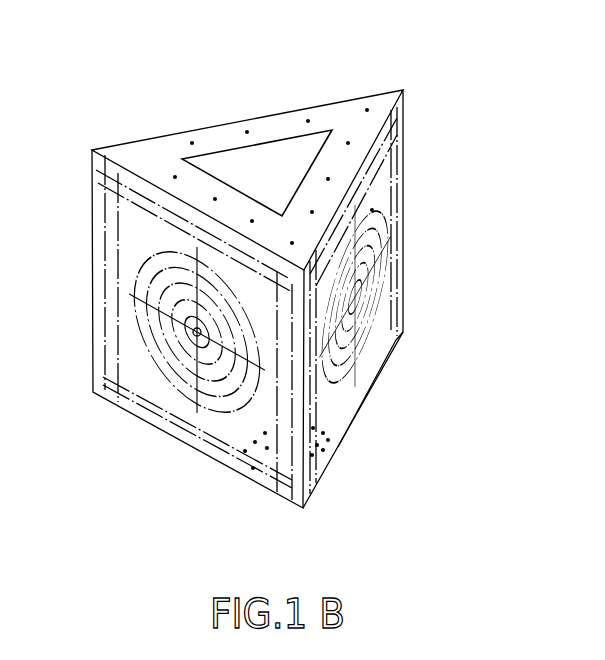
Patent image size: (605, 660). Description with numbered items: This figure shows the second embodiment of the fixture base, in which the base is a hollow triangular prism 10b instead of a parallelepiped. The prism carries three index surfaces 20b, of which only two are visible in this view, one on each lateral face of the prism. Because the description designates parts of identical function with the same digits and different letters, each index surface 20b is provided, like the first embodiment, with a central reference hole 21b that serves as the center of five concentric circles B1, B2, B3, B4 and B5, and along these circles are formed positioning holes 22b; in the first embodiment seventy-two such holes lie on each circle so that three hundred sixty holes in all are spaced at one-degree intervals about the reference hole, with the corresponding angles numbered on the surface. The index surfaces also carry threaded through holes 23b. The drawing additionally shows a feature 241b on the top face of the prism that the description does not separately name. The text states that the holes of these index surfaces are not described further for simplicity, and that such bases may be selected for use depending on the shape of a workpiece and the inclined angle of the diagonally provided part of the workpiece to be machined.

The hollow triangular prism 10b is at (369, 84).
The index surfaces 20b is at (232, 122).
The top plate 241b is at (137, 157).
The reference hole 21b is at (357, 298).
The positioning holes 22b is at (373, 211).
The threaded through holes 23b is at (265, 450).
The concentric circle B1 is at (195, 338).
The concentric circle B2 is at (192, 326).
The concentric circle B3 is at (160, 330).
The concentric circle B4 is at (150, 318).
The concentric circle B5 is at (137, 300).